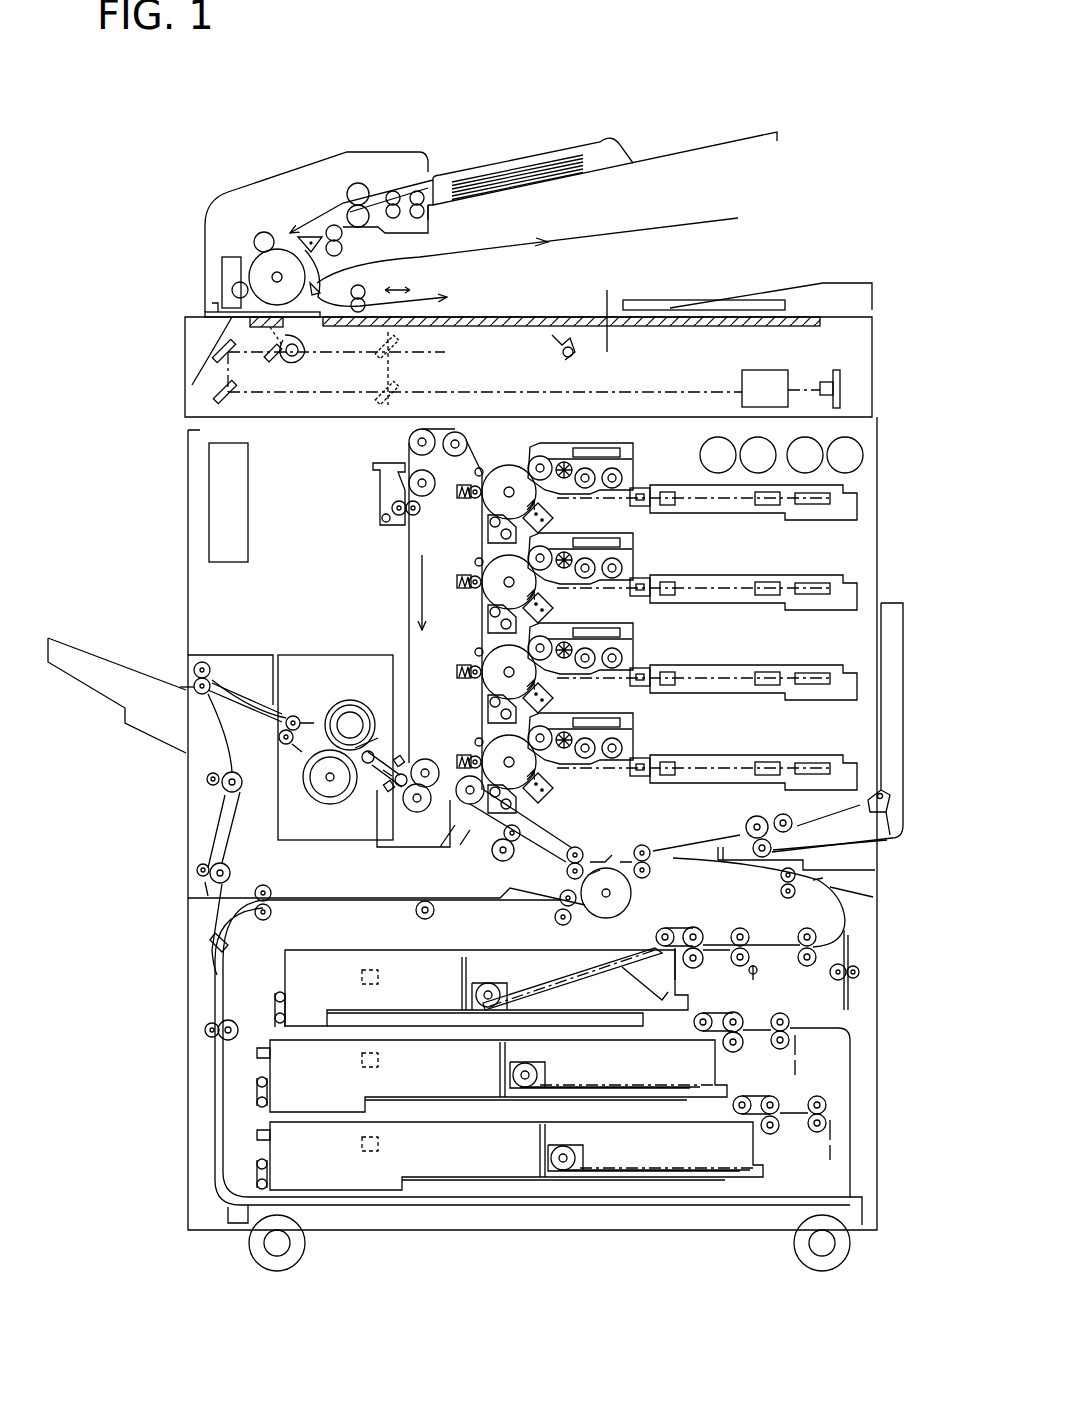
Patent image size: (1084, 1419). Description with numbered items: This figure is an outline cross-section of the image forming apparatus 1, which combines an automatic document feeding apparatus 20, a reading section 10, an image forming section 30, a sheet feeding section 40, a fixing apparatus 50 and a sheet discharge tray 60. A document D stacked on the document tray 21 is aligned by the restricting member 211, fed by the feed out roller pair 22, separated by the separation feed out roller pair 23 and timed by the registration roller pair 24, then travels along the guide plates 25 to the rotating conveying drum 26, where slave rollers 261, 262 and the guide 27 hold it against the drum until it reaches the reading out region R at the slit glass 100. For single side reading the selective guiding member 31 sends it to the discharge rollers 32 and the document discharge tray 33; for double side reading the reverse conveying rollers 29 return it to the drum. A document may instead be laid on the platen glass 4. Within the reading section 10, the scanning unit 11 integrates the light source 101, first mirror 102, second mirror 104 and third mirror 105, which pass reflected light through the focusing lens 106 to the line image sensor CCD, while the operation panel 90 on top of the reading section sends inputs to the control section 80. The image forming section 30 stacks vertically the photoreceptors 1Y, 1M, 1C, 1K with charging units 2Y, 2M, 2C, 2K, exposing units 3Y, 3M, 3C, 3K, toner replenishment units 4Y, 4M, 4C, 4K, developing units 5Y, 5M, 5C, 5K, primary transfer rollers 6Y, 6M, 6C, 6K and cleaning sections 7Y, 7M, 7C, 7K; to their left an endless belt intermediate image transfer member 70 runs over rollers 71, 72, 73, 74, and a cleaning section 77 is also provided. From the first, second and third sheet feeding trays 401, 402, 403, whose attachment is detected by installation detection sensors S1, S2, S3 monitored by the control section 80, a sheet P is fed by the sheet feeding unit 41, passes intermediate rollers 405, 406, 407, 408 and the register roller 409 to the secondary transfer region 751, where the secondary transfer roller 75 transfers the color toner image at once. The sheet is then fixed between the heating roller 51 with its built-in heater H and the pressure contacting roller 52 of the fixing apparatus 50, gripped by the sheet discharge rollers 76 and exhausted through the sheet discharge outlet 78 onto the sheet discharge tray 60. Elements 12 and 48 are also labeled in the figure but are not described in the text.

The image forming apparatus 1 is at (903, 588).
The reading section 10 is at (198, 347).
The scanning unit 11 is at (292, 370).
The image reading unit 12 is at (210, 383).
The automatic document feeding apparatus 20 is at (684, 140).
The document tray 21 is at (605, 146).
The restricting member 211 is at (552, 147).
The feed out roller pair 22 is at (420, 191).
The separation feed out roller pair 23 is at (393, 191).
The registration roller pair 24 is at (355, 205).
The guide plates 25 is at (347, 191).
The conveying drum 26 is at (255, 252).
The slave roller 261 is at (260, 232).
The slave roller 262 is at (234, 284).
The guide 27 is at (228, 262).
The reverse conveying rollers 29 is at (380, 268).
The image forming section 30 is at (880, 547).
The selective guiding member 31 is at (300, 215).
The discharge rollers 32 is at (332, 225).
The document discharge tray 33 is at (735, 220).
The platen glass 4 is at (698, 328).
The sheet feeding section 40 is at (882, 995).
The sheet feeding unit 41 is at (683, 928).
The first sheet feeding tray 401 is at (358, 950).
The second sheet feeding tray 402 is at (305, 1038).
The third sheet feeding tray 403 is at (318, 1106).
The intermediate roller 405 is at (810, 930).
The intermediate roller 406 is at (781, 890).
The intermediate roller 407 is at (650, 875).
The intermediate roller 408 is at (582, 848).
The register roller 409 is at (512, 860).
The pressure member 48 is at (398, 755).
The fixing apparatus 50 is at (338, 650).
The heating roller 51 is at (352, 700).
The pressure contacting roller 52 is at (328, 804).
The sheet discharge tray 60 is at (118, 665).
The intermediate image transfer member 70 is at (408, 578).
The roller 71 is at (408, 447).
The roller 72 is at (472, 805).
The roller 73 is at (520, 833).
The roller 74 is at (465, 428).
The secondary transfer roller 75 is at (422, 812).
The secondary transfer region 751 is at (395, 847).
The sheet discharge rollers 76 is at (212, 672).
The cleaning section 77 is at (380, 500).
The sheet discharge outlet 78 is at (195, 660).
The control section 80 is at (248, 525).
The operation panel 90 is at (697, 300).
The slit glass 100 is at (213, 343).
The light source 101 is at (290, 322).
The first mirror 102 is at (265, 360).
The second mirror 104 is at (218, 380).
The third mirror 105 is at (235, 403).
The focusing lens 106 is at (765, 370).
The photoreceptor 1Y is at (503, 470).
The photoreceptor 1M is at (484, 572).
The photoreceptor 1C is at (484, 662).
The photoreceptor 1K is at (484, 740).
The charging unit 2Y is at (550, 518).
The charging unit 2M is at (550, 608).
The charging unit 2C is at (550, 698).
The charging unit 2K is at (553, 783).
The exposing unit 3Y is at (752, 520).
The exposing unit 3M is at (752, 610).
The exposing unit 3C is at (825, 665).
The exposing unit 3K is at (757, 755).
The toner replenishment unit 4Y is at (718, 455).
The toner replenishment unit 4M is at (758, 455).
The toner replenishment unit 4C is at (805, 455).
The toner replenishment unit 4K is at (845, 455).
The developing unit 5Y is at (565, 445).
The developing unit 5M is at (606, 536).
The developing unit 5C is at (606, 626).
The developing unit 5K is at (606, 716).
The primary transfer roller 6Y is at (470, 500).
The primary transfer roller 6M is at (470, 590).
The primary transfer roller 6C is at (470, 680).
The primary transfer roller 6K is at (470, 758).
The cleaning section 7Y is at (488, 536).
The cleaning section 7M is at (488, 626).
The cleaning section 7C is at (488, 710).
The cleaning section 7K is at (517, 800).
The document D is at (515, 167).
The reading out region R is at (300, 328).
The line image sensor CCD is at (840, 388).
The heater H is at (338, 715).
The sheet P is at (600, 982).
The first installation detection sensor S1 is at (380, 977).
The second installation detection sensor S2 is at (380, 1060).
The third installation detection sensor S3 is at (380, 1144).